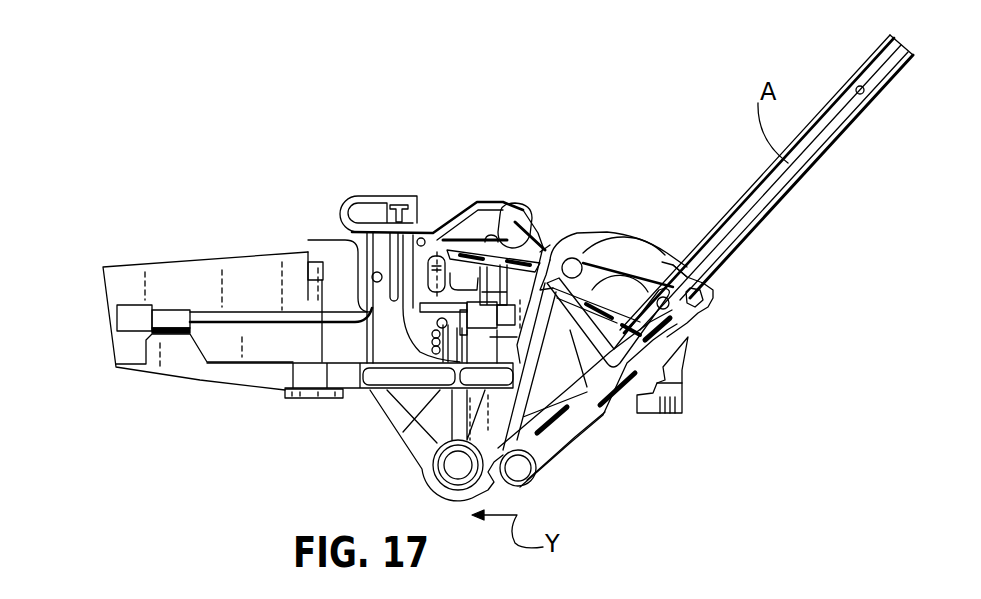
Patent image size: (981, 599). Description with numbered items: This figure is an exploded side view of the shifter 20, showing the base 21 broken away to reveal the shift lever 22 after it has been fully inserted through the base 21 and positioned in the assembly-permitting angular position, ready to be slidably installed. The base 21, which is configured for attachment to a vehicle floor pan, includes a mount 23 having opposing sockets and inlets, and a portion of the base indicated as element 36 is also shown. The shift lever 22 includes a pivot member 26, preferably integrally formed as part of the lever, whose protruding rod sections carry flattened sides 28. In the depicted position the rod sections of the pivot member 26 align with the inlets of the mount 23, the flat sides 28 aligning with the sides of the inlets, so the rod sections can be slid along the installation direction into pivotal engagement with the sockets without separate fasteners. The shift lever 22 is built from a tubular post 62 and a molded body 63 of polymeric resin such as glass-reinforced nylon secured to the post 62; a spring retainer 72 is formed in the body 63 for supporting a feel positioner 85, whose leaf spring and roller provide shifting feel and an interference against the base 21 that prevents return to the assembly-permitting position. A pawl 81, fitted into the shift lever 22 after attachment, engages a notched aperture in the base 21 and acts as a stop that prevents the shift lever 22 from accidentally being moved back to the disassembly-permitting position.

The shifter 20 is at (48, 209).
The base 21 is at (53, 314).
The shift lever 22 is at (805, 32).
The mount 23 is at (360, 485).
The pivot member 26 is at (600, 485).
The flattened sides 28 is at (580, 534).
The stop member 36 is at (660, 414).
The tubular post 62 is at (745, 193).
The molded body 63 is at (602, 210).
The spring retainer 72 is at (713, 300).
The pawl 81 is at (673, 262).
The feel positioner 85 is at (534, 235).